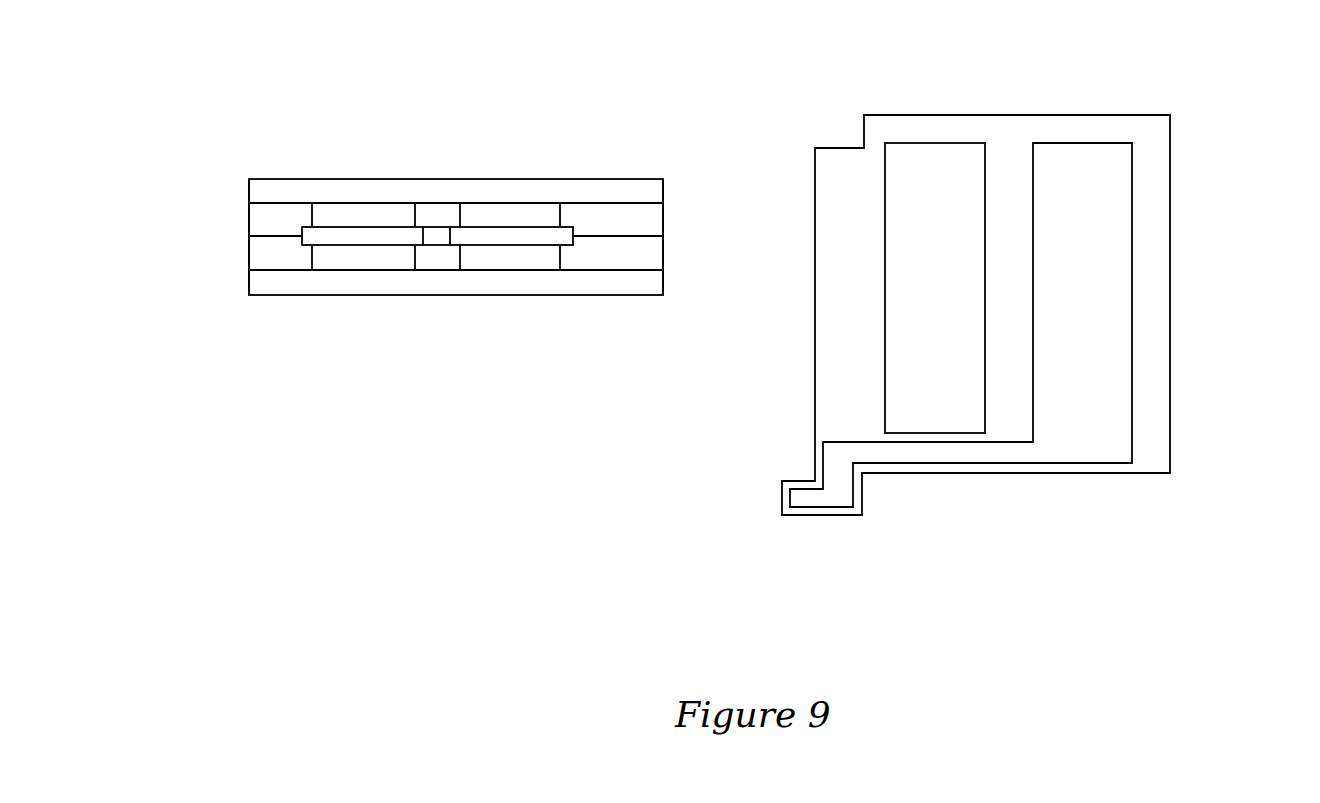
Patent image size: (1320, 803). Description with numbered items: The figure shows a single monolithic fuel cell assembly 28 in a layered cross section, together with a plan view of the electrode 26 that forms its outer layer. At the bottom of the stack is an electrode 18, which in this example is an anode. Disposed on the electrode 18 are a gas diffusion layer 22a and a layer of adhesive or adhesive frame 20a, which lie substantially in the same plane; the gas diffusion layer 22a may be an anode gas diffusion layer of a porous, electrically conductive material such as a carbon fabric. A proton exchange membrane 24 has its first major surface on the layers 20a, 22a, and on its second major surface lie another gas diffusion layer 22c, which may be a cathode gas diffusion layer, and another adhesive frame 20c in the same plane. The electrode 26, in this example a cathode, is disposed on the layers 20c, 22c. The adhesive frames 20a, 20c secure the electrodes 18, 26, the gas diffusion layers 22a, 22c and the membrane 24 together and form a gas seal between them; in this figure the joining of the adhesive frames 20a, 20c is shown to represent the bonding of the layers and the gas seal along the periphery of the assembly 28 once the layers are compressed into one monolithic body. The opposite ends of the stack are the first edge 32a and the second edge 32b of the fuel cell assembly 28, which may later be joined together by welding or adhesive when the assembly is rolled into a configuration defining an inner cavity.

The fuel cell assembly 28 is at (287, 110).
The electrode 26 is at (502, 190).
The electrode 18 is at (602, 285).
The adhesive frame 20c is at (272, 210).
The adhesive frame 20a is at (263, 259).
The gas diffusion layer 22c is at (360, 208).
The gas diffusion layer 22a is at (342, 258).
The proton exchange membrane 24 is at (392, 235).
The second edge 32b is at (227, 222).
The first edge 32a is at (673, 244).